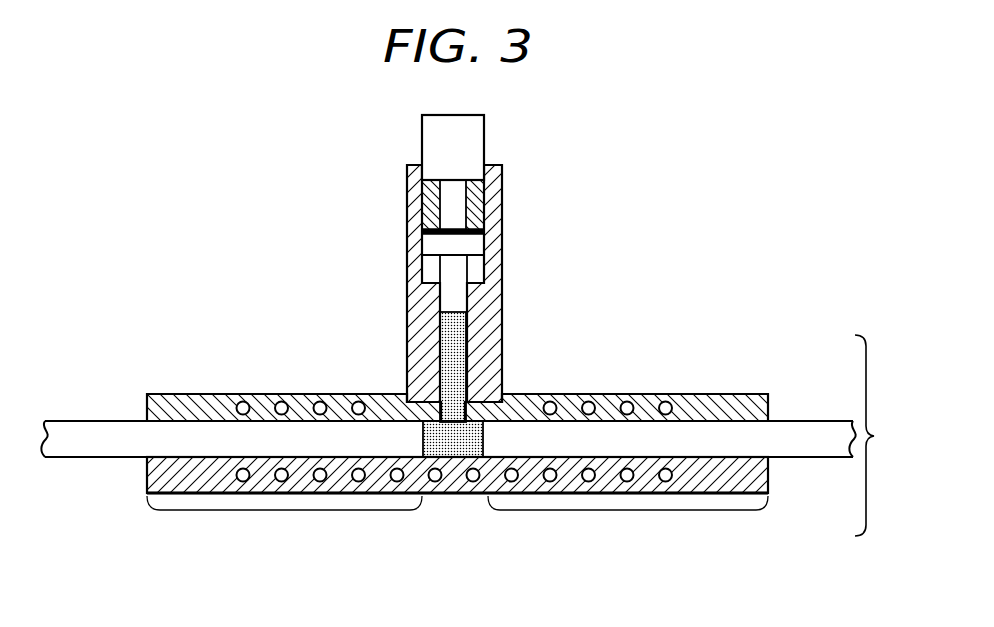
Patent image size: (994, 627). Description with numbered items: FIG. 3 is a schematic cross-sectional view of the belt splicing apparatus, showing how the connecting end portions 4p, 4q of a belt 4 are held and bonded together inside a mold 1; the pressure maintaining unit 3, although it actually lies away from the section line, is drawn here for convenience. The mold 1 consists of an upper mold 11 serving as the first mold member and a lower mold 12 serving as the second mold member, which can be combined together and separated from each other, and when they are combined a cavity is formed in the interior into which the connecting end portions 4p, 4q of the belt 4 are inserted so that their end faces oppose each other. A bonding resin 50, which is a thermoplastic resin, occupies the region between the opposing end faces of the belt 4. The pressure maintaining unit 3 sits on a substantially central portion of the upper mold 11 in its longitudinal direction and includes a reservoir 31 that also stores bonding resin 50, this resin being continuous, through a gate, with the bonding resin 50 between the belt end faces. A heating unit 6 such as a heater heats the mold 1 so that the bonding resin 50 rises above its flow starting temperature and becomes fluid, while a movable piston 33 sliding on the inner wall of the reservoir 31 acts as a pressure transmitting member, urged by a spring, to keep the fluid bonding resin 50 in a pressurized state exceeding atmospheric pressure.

The mold 1 is at (897, 449).
The pressure maintaining unit 3 is at (503, 174).
The belt 4 is at (90, 433).
The connecting end portion 4p is at (284, 522).
The connecting end portion 4q is at (628, 521).
The heating unit 6 is at (283, 402).
The upper mold 11 is at (585, 408).
The lower mold 12 is at (678, 475).
The reservoir 31 is at (467, 328).
The movable piston 33 is at (447, 265).
The bonding resin 50 is at (446, 357).